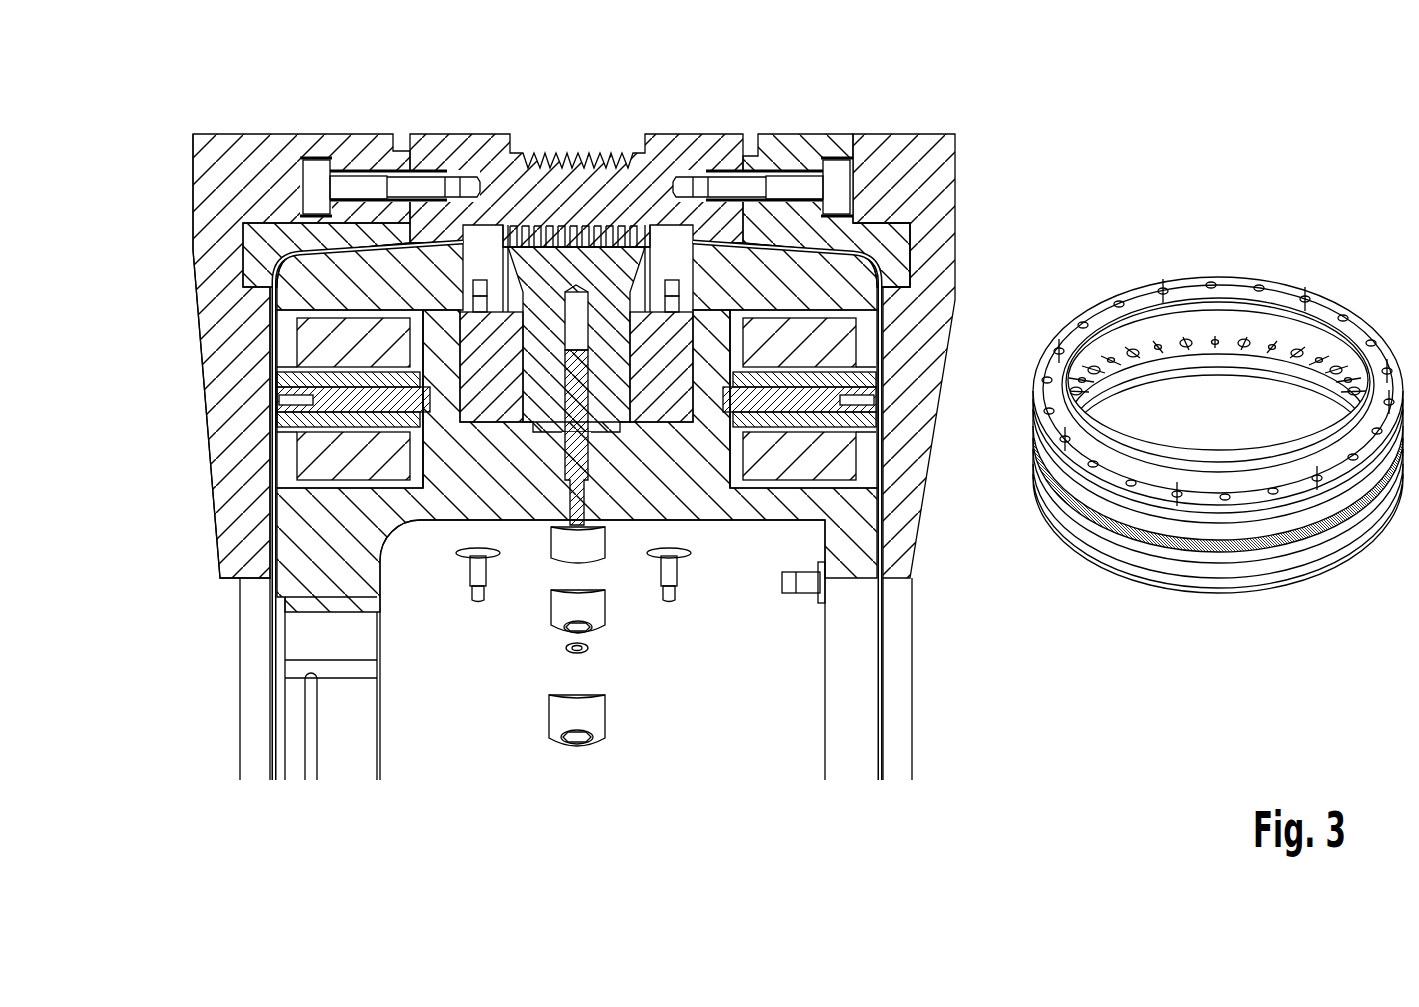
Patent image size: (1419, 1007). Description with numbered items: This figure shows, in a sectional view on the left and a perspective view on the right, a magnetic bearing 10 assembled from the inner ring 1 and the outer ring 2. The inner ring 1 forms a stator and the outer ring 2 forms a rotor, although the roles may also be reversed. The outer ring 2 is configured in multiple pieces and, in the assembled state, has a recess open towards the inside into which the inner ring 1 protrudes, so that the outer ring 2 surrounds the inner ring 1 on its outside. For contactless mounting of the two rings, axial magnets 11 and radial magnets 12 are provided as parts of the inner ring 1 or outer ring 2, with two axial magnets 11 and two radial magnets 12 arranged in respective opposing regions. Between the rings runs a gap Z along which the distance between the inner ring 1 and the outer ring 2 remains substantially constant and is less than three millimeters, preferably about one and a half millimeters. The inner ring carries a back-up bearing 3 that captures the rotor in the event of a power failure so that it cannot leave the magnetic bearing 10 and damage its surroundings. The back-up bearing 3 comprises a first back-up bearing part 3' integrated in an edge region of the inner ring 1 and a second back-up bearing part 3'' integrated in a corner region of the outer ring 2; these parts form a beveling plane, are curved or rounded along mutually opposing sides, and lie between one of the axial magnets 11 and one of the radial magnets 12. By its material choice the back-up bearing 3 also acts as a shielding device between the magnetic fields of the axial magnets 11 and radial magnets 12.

The inner ring 1 is at (724, 512).
The outer ring 2 is at (216, 397).
The back-up bearing 3 is at (551, 308).
The first back-up bearing part 3' is at (763, 143).
The second back-up bearing part 3'' is at (871, 179).
The magnetic bearing 10 is at (1152, 621).
The axial magnets 11 is at (611, 222).
The radial magnets 12 is at (933, 372).
The gap Z is at (262, 258).